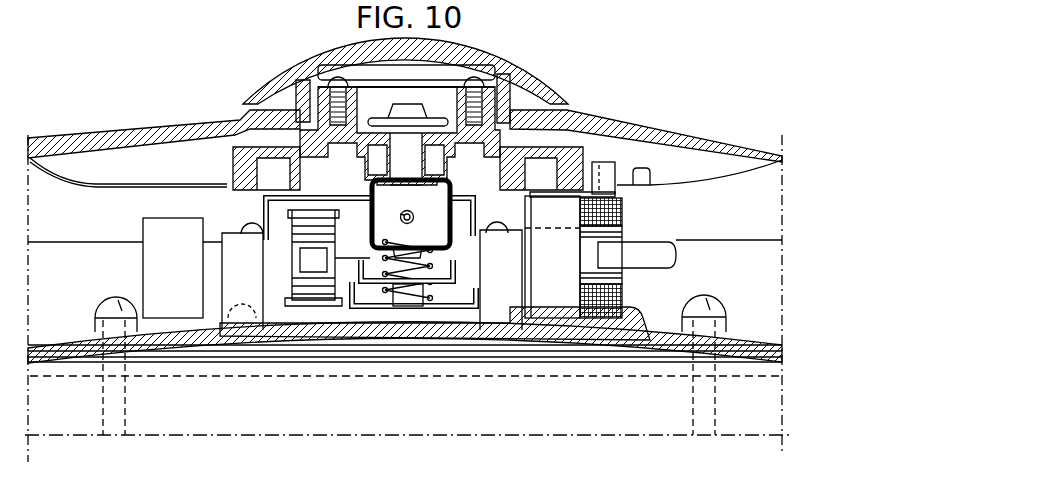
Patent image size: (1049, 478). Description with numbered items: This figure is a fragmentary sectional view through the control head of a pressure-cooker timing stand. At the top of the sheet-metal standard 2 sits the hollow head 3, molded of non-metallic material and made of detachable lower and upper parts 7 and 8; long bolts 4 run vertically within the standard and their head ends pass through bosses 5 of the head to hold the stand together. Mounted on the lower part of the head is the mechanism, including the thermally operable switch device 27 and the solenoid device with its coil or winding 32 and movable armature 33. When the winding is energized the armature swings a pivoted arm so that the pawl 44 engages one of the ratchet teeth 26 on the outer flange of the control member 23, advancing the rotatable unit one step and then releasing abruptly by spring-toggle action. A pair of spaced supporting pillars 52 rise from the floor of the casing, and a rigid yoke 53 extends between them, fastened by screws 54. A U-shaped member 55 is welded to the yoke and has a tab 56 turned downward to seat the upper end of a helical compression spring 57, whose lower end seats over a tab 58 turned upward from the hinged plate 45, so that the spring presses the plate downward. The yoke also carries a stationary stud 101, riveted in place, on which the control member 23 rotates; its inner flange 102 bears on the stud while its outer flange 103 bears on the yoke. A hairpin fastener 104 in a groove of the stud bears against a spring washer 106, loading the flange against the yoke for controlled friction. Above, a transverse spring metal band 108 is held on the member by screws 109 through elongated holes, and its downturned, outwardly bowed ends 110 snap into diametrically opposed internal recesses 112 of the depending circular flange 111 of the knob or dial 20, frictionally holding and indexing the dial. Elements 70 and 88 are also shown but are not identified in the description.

The standard 2 is at (398, 432).
The hollow head 3 is at (106, 126).
The long bolts 4 is at (125, 413).
The bosses 5 is at (95, 323).
The lower part of head 7 is at (72, 280).
The upper part of head 8 is at (173, 122).
The knob or dial 20 is at (547, 63).
The control member 23 is at (233, 150).
The ratchet teeth 26 is at (233, 163).
The thermally operable switch device 27 is at (143, 222).
The coil or winding 32 is at (614, 214).
The movable armature 33 is at (648, 262).
The pawl 44 is at (618, 172).
The hinged plate 45 is at (355, 305).
The supporting pillars 52 is at (230, 271).
The rigid yoke 53 is at (264, 200).
The screws 54 is at (249, 228).
The U-shaped member 55 is at (400, 214).
The tab 56 is at (412, 246).
The helical compression spring 57 is at (424, 262).
The tab 58 is at (398, 303).
The cup 70 is at (374, 278).
The ring 88 is at (418, 199).
The stud 101 is at (395, 153).
The inner flange 102 is at (440, 170).
The outer flange 103 is at (440, 180).
The hairpin fastener 104 is at (378, 118).
The spring washer 106 is at (438, 118).
The spring metal band 108 is at (447, 82).
The screws 109 is at (330, 77).
The ends of band 110 is at (297, 79).
The depending circular flange 111 is at (307, 90).
The internal recesses 112 is at (317, 80).